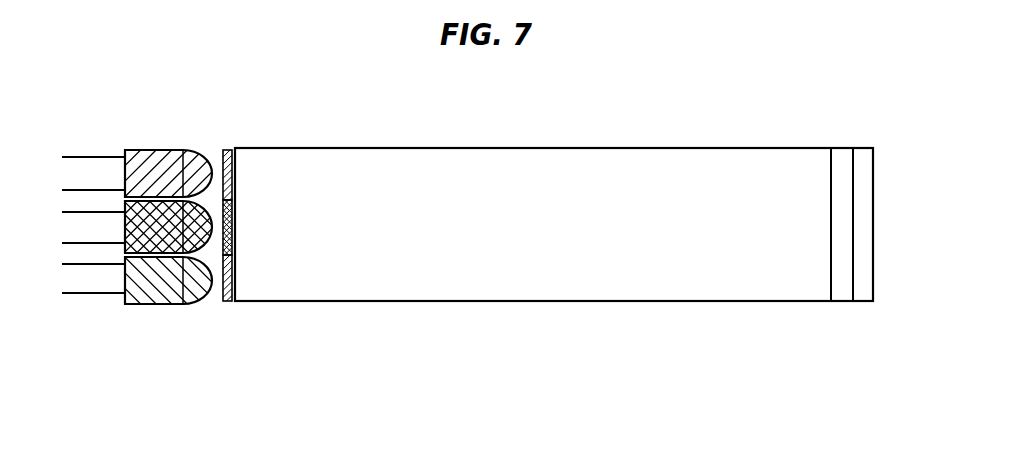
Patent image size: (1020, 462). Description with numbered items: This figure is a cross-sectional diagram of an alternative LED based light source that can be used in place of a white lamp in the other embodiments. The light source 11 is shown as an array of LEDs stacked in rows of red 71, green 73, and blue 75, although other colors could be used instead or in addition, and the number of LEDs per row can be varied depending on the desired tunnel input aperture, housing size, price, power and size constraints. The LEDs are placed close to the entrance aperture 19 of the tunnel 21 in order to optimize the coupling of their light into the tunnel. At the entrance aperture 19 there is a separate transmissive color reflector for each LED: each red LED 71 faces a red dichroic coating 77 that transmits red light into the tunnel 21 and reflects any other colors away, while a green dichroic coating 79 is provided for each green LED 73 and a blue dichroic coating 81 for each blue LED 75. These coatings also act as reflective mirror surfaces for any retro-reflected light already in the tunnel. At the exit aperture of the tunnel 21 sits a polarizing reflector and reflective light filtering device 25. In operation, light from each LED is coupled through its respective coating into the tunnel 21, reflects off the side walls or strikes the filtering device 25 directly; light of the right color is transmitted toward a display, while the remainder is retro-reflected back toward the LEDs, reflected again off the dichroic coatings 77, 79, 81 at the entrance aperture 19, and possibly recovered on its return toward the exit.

The light source 11 is at (103, 344).
The entrance aperture 19 is at (270, 187).
The tunnel 21 is at (545, 148).
The polarizing reflector and reflective light filtering device 25 is at (842, 152).
The red LED 71 is at (170, 150).
The green LED 73 is at (214, 288).
The blue LED 75 is at (170, 304).
The red dichroic coating 77 is at (236, 161).
The green dichroic coating 79 is at (236, 214).
The blue dichroic coating 81 is at (235, 264).